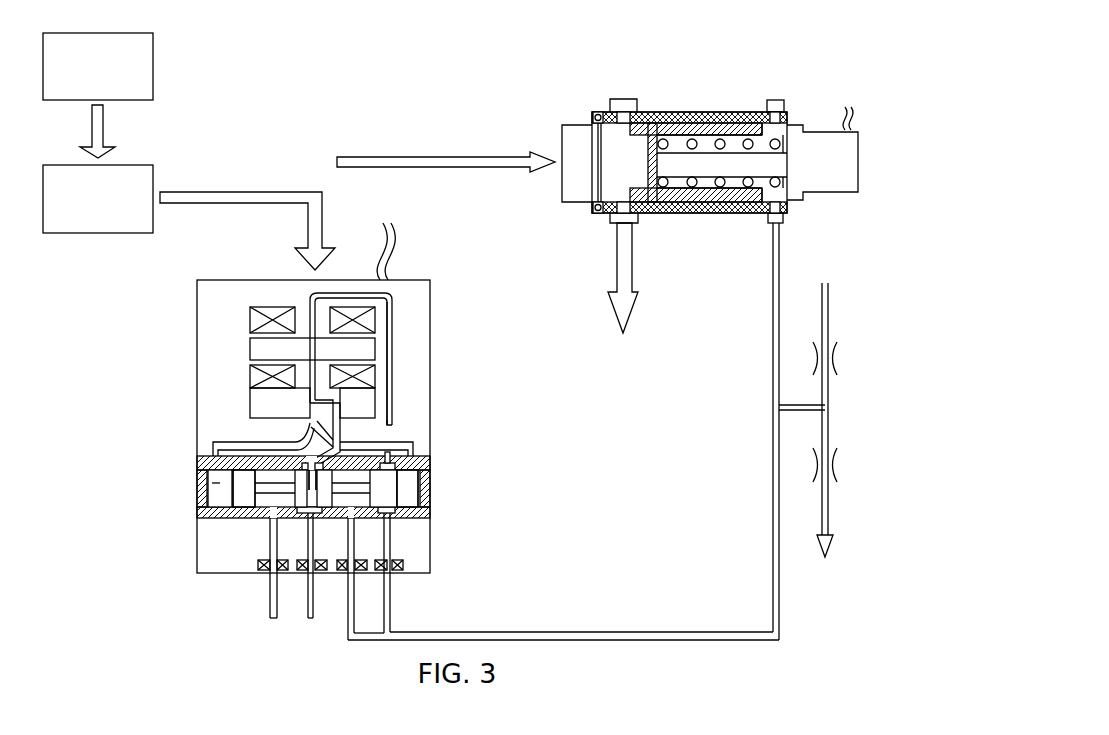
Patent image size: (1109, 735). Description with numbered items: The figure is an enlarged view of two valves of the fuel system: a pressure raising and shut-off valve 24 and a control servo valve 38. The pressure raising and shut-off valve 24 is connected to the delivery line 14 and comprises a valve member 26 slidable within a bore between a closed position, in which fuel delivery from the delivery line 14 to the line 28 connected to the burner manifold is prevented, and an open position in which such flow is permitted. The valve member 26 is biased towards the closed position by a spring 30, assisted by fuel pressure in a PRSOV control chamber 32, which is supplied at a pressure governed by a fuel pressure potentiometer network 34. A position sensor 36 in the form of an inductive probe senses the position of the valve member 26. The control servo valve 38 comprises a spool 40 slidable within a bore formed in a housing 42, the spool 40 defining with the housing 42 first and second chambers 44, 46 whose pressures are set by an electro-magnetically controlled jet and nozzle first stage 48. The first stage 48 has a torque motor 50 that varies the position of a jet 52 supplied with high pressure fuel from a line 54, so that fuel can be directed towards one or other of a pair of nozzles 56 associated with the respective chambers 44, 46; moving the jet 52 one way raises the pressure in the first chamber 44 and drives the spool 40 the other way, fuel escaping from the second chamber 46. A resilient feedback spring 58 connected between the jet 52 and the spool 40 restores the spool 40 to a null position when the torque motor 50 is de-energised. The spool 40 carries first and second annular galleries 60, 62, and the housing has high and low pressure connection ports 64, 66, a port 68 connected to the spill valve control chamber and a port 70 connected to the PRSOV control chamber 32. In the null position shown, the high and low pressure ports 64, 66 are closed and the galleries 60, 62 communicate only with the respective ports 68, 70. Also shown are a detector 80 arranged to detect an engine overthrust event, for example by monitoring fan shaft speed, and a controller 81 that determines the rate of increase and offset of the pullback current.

The delivery line 14 is at (430, 157).
The pressure raising and shut-off valve 24 is at (710, 125).
The valve member 26 is at (698, 112).
The line 28 is at (617, 252).
The spring 30 is at (717, 112).
The PRSOV control chamber 32 is at (773, 110).
The fuel pressure potentiometer network 34 is at (840, 405).
The position sensor 36 is at (818, 170).
The control servo valve 38 is at (188, 320).
The spool 40 is at (387, 480).
The housing 42 is at (392, 458).
The first chamber 44 is at (198, 476).
The second chamber 46 is at (400, 496).
The jet and nozzle first stage 48 is at (400, 364).
The torque motor 50 is at (400, 311).
The jet 52 is at (253, 395).
The line 54 is at (393, 582).
The nozzles 56 is at (308, 422).
The feedback spring 58 is at (395, 427).
The first annular gallery 60 is at (262, 499).
The second annular gallery 62 is at (392, 514).
The high pressure connection port 64 is at (360, 501).
The low pressure connection port 66 is at (268, 557).
The port 68 is at (270, 518).
The port 70 is at (393, 557).
The detector 80 is at (83, 79).
The controller 81 is at (83, 211).